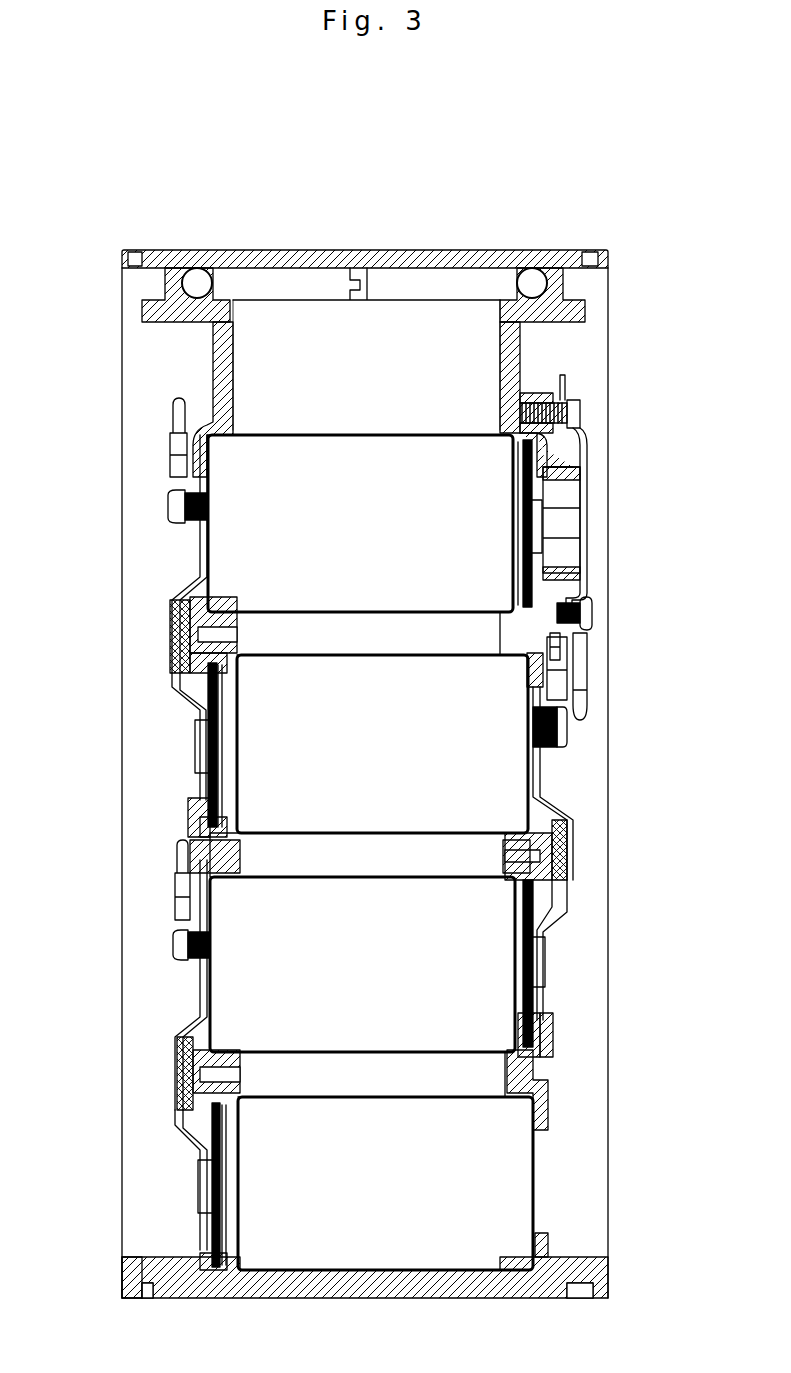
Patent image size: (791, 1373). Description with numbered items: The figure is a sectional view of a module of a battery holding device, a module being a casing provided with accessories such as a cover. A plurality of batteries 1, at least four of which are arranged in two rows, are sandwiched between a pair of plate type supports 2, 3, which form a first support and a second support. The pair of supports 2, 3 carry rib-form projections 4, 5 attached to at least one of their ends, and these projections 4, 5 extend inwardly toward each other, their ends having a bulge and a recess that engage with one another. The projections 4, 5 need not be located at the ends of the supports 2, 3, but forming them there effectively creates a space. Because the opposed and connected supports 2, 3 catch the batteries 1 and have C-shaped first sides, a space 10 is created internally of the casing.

The battery 1 is at (465, 578).
The plate type support 2 is at (510, 362).
The plate type support 3 is at (223, 370).
The rib-form projection 4 is at (480, 256).
The rib-form projection 5 is at (282, 262).
The space 10 is at (396, 360).